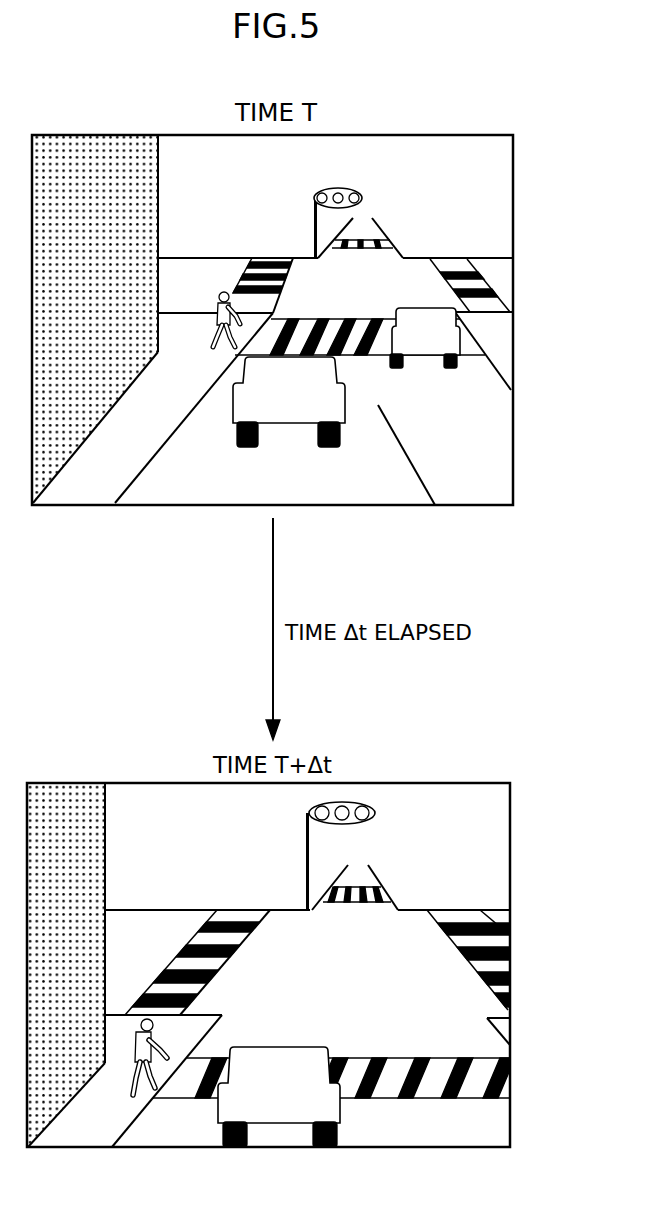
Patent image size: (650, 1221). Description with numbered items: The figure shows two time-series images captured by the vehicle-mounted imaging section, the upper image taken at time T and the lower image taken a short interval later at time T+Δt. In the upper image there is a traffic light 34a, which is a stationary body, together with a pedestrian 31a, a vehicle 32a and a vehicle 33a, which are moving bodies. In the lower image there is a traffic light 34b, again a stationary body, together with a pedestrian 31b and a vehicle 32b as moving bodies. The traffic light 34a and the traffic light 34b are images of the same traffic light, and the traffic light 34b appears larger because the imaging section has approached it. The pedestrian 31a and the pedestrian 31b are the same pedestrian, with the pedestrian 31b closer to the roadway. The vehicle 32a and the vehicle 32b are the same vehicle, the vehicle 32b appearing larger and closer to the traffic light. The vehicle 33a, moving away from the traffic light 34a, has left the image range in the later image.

The pedestrian 31a is at (224, 292).
The vehicle 32a is at (238, 412).
The vehicle 33a is at (452, 343).
The traffic light 34a is at (347, 188).
The pedestrian 31b is at (133, 1058).
The vehicle 32b is at (335, 1107).
The traffic light 34b is at (358, 802).